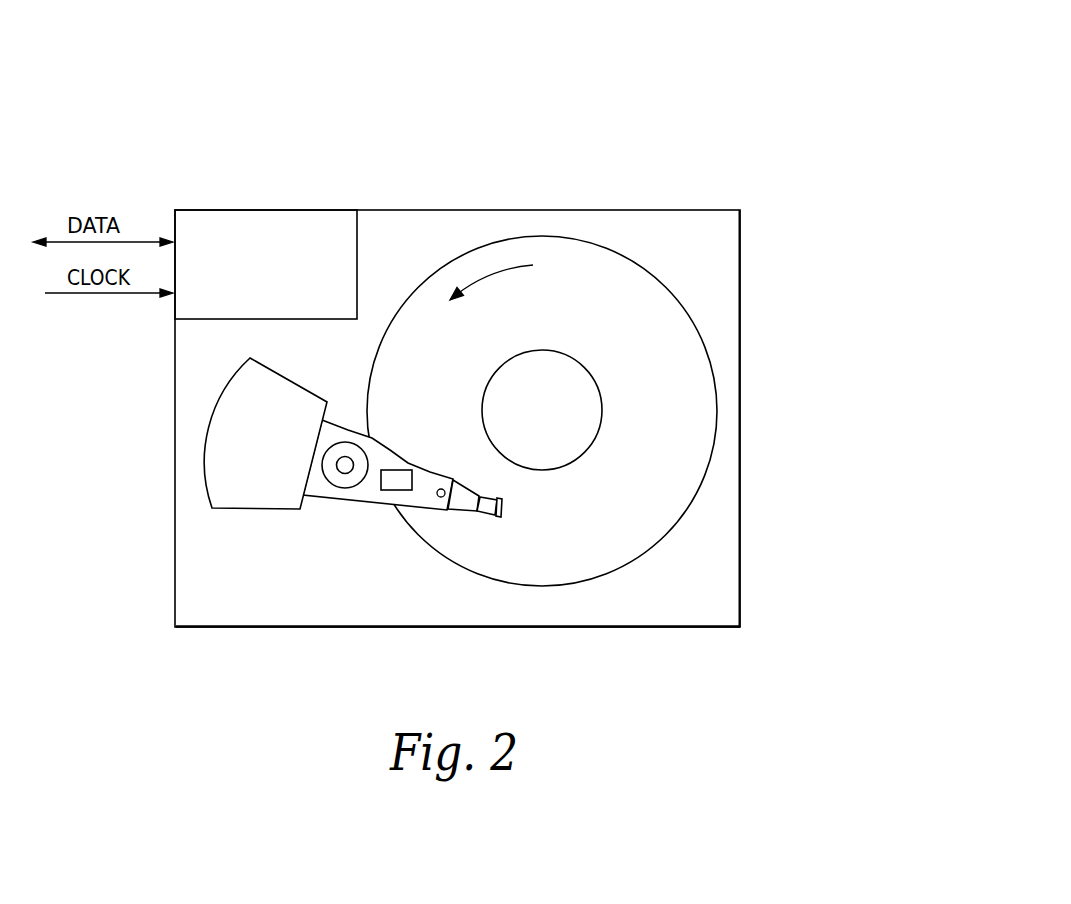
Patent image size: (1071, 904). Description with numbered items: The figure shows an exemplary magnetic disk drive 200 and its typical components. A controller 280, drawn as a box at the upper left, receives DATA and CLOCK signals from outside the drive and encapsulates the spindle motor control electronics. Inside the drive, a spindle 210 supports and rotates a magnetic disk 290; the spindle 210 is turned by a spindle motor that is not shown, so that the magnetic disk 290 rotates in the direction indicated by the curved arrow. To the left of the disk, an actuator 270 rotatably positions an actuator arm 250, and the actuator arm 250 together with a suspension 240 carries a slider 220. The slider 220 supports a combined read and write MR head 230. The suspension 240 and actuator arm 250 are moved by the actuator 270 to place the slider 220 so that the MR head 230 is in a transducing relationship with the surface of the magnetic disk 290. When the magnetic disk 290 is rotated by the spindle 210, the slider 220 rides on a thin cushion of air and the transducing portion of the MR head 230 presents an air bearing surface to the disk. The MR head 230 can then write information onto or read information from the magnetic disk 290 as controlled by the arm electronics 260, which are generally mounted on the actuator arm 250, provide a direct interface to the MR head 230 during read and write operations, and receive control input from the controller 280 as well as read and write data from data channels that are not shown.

The magnetic disk drive 200 is at (659, 85).
The spindle 210 is at (567, 355).
The slider 220 is at (505, 497).
The MR head 230 is at (503, 515).
The suspension 240 is at (465, 481).
The actuator arm 250 is at (378, 442).
The arm electronics 260 is at (392, 490).
The actuator 270 is at (288, 373).
The controller 280 is at (360, 260).
The magnetic disk 290 is at (653, 273).